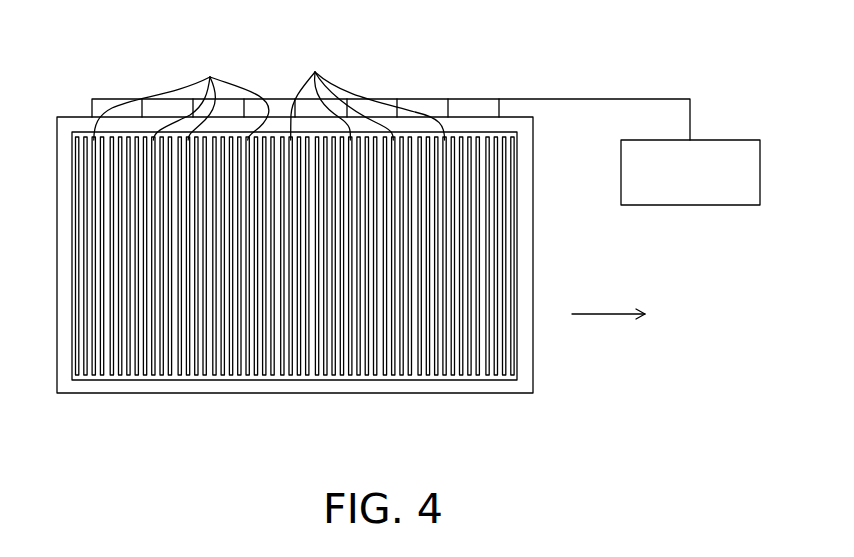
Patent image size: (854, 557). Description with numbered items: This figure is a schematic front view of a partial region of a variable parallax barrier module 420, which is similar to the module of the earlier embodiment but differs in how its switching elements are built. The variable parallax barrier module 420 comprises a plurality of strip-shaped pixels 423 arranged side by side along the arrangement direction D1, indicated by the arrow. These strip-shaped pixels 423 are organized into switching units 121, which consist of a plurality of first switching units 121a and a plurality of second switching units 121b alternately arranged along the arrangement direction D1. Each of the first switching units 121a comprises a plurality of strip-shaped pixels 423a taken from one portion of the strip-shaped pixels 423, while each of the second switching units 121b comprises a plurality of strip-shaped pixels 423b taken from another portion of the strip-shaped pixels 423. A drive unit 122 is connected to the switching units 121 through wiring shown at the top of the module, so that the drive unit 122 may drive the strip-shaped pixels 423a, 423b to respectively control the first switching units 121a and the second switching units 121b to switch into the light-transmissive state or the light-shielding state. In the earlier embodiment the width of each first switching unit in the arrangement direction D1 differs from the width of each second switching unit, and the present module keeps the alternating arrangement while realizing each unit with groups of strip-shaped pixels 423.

The switching units 121 is at (391, 70).
The first switching units 121a is at (368, 94).
The second switching units 121b is at (181, 94).
The drive unit 122 is at (688, 205).
The variable parallax barrier module 420 is at (663, 416).
The strip-shaped pixels 423 is at (290, 305).
The strip-shaped pixels 423a is at (146, 282).
The strip-shaped pixels 423b is at (81, 376).
The arrangement direction D1 is at (626, 316).